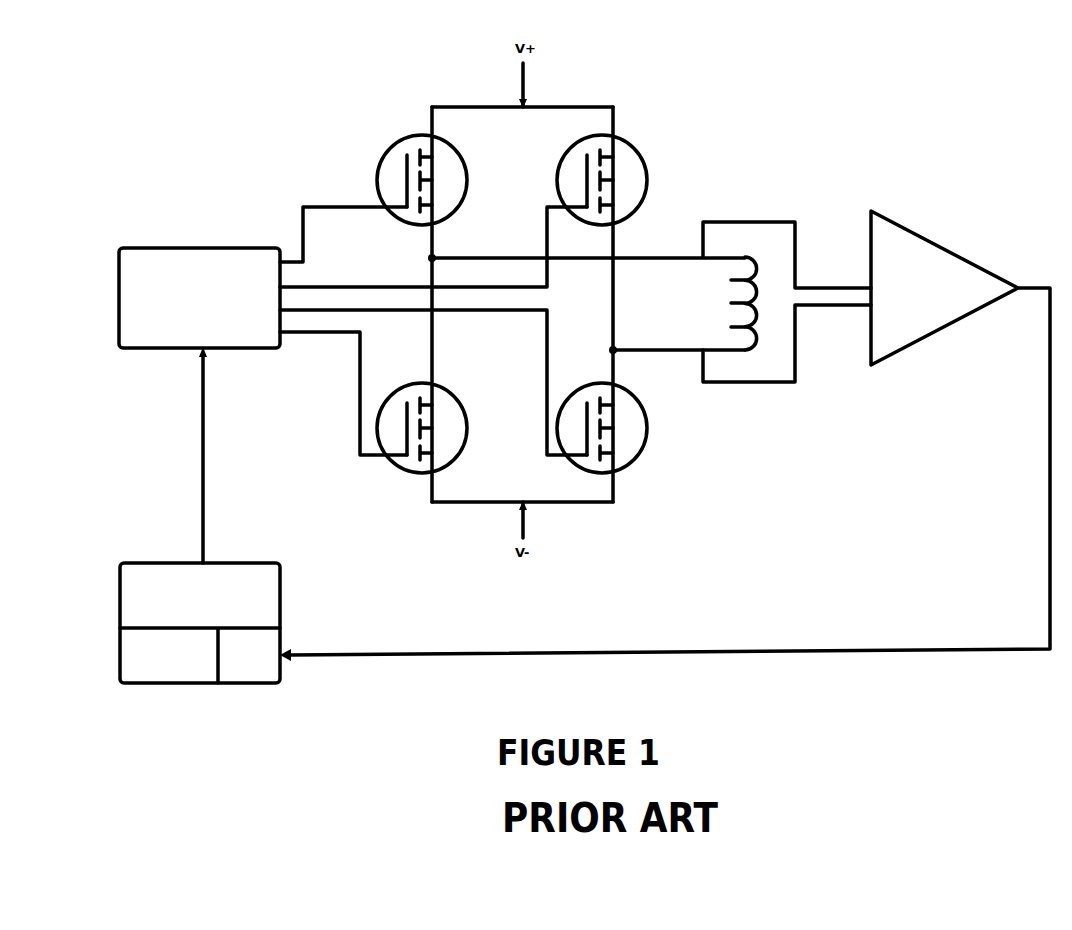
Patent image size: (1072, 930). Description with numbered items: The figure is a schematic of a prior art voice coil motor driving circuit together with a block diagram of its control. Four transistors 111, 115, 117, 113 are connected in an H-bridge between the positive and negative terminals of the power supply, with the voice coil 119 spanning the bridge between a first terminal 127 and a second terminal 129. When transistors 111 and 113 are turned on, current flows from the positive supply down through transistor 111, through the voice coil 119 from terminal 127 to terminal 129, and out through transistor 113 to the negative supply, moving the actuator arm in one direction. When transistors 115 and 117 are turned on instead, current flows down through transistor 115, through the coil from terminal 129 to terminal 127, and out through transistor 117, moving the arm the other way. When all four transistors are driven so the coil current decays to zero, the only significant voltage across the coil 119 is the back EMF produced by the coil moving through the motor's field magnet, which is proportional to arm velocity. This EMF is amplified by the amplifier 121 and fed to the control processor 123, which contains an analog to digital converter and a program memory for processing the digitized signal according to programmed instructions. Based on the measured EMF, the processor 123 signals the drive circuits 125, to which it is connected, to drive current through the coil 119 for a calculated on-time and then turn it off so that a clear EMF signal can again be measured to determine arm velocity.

The transistor 111 is at (385, 165).
The transistor 113 is at (641, 450).
The transistor 115 is at (636, 151).
The transistor 117 is at (400, 389).
The voice coil 119 is at (750, 282).
The amplifier 121 is at (930, 242).
The control processor 123 is at (270, 563).
The drive circuits 125 is at (155, 248).
The terminal 127 is at (703, 257).
The terminal 129 is at (703, 350).